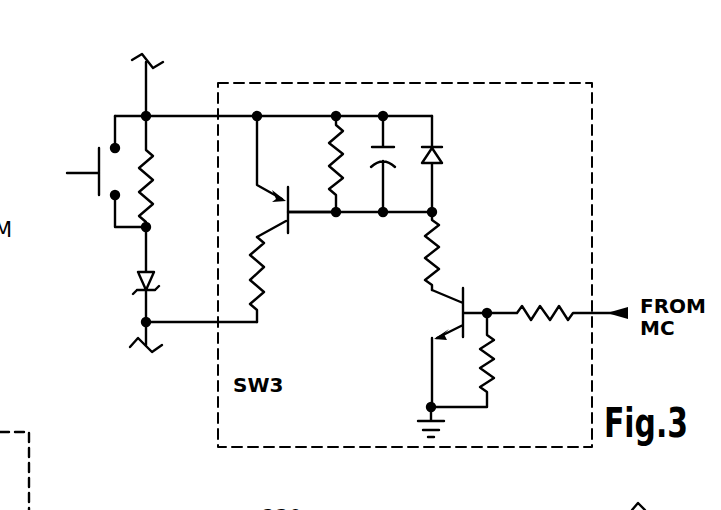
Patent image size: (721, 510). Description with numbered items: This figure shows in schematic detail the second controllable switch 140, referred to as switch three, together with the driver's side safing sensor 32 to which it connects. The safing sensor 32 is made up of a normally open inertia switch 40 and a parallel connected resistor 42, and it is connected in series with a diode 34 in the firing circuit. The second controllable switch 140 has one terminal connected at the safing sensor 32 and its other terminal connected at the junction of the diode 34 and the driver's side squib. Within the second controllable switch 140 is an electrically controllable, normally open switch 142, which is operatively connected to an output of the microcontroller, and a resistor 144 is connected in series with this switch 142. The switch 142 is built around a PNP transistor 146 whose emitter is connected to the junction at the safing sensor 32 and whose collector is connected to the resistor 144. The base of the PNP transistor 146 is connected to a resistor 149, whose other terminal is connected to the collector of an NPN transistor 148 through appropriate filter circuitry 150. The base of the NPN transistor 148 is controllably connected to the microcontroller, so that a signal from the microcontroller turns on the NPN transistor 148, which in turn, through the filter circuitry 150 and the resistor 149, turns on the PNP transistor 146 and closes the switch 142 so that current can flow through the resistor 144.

The driver's side safing sensor 32 is at (93, 110).
The normally open inertia switch 40 is at (99, 178).
The resistor 42 is at (151, 180).
The diode 34 is at (140, 285).
The second controllable switch 140 is at (512, 84).
The electrically controllable, normally open switch 142 is at (486, 180).
The resistor 144 is at (263, 282).
The PNP transistor 146 is at (262, 211).
The NPN transistor 148 is at (445, 312).
The resistor 149 is at (440, 250).
The filter circuitry 150 is at (381, 97).